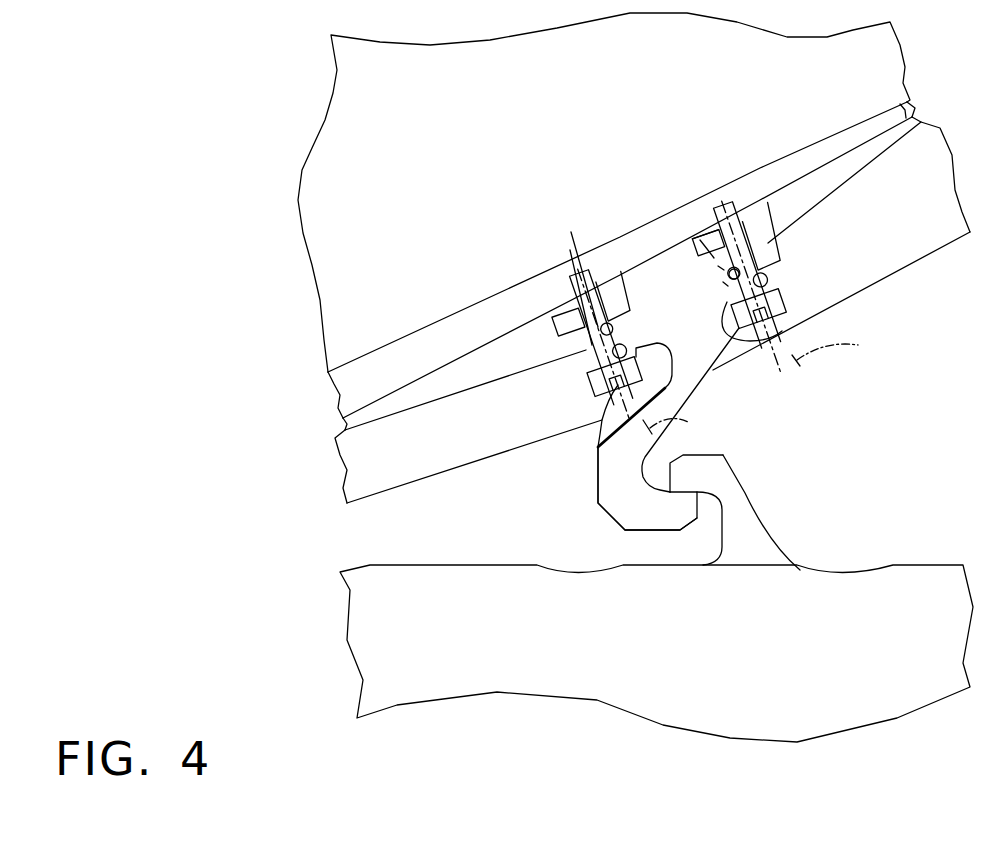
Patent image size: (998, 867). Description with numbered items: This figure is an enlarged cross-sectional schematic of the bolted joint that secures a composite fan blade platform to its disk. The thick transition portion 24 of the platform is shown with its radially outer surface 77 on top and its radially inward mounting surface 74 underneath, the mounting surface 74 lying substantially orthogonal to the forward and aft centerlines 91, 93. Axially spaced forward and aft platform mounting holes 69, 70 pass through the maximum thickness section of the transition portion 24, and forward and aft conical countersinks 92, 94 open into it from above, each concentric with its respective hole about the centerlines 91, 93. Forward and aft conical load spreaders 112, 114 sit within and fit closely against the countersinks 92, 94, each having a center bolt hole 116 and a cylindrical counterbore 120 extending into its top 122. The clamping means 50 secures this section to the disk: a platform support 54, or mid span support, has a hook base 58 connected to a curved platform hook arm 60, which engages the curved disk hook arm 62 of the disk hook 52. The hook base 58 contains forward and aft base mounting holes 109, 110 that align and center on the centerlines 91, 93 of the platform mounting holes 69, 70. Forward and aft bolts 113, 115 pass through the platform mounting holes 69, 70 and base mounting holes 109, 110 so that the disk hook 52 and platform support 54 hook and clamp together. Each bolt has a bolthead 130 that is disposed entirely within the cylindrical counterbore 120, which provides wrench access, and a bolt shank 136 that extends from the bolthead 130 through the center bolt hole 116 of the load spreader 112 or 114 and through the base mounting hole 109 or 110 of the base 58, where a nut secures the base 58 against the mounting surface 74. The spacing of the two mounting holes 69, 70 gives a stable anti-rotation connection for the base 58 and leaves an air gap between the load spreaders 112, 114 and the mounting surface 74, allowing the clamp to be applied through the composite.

The transition portion 24 is at (478, 347).
The clamping means 50 is at (570, 497).
The disk hook 52 is at (745, 494).
The platform support 54 is at (598, 478).
The hook base 58 is at (713, 370).
The curved platform hook arm 60 is at (656, 530).
The curved disk hook arm 62 is at (703, 467).
The forward platform mounting hole 69 is at (570, 250).
The aft platform mounting hole 70 is at (729, 277).
The radially inward mounting surface 74 is at (562, 370).
The radially outer surface 77 is at (852, 150).
The forward centerline 91 is at (686, 423).
The forward conical countersink 92 is at (571, 232).
The aft centerline 93 is at (842, 348).
The aft conical countersink 94 is at (760, 200).
The forward base mounting hole 109 is at (645, 344).
The aft base mounting hole 110 is at (778, 280).
The forward conical load spreader 112 is at (543, 307).
The forward bolt 113 is at (578, 340).
The aft conical load spreader 114 is at (720, 268).
The aft bolt 115 is at (787, 295).
The center bolt hole 116 is at (723, 282).
The cylindrical counterbore 120 is at (567, 296).
The top 122 is at (544, 322).
The bolthead 130 is at (700, 240).
The bolt shank 136 is at (781, 337).